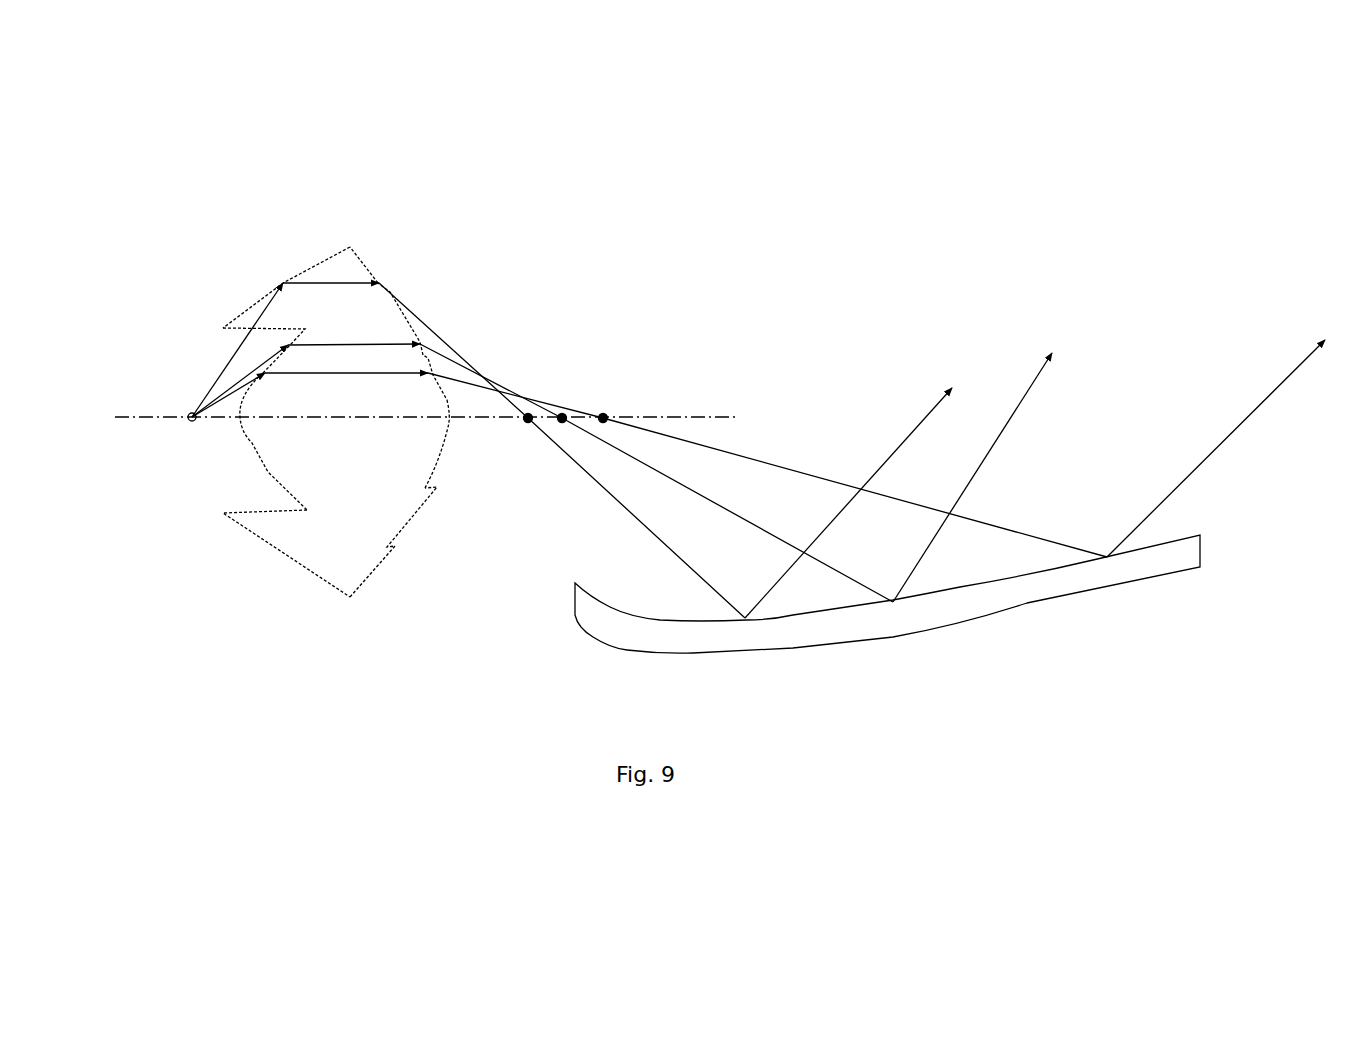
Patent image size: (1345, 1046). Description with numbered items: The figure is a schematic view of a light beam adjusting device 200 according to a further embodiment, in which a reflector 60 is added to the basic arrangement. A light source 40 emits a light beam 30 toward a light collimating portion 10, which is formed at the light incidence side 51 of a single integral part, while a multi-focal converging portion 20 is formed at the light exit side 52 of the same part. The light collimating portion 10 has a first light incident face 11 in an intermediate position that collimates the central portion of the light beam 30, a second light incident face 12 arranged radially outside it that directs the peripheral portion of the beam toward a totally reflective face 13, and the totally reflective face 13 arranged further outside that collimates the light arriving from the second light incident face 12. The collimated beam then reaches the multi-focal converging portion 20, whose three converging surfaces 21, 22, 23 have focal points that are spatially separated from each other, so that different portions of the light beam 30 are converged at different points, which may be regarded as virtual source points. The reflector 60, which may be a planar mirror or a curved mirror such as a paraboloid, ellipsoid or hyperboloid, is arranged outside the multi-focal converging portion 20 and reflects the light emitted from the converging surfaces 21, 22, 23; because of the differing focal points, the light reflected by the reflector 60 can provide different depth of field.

The light beam adjusting device 200 is at (608, 127).
The light collimating portion 10 is at (197, 324).
The first light incident face 11 is at (258, 455).
The second light incident face 12 is at (240, 327).
The totally reflective face 13 is at (305, 270).
The multi-focal converging portion 20 is at (447, 318).
The converging surface 21 is at (446, 397).
The converging surface 22 is at (413, 325).
The converging surface 23 is at (372, 271).
The light beam 30 is at (218, 385).
The light source 40 is at (189, 421).
The light incidence side 51 is at (213, 500).
The light exit side 52 is at (455, 525).
The reflector 60 is at (705, 637).